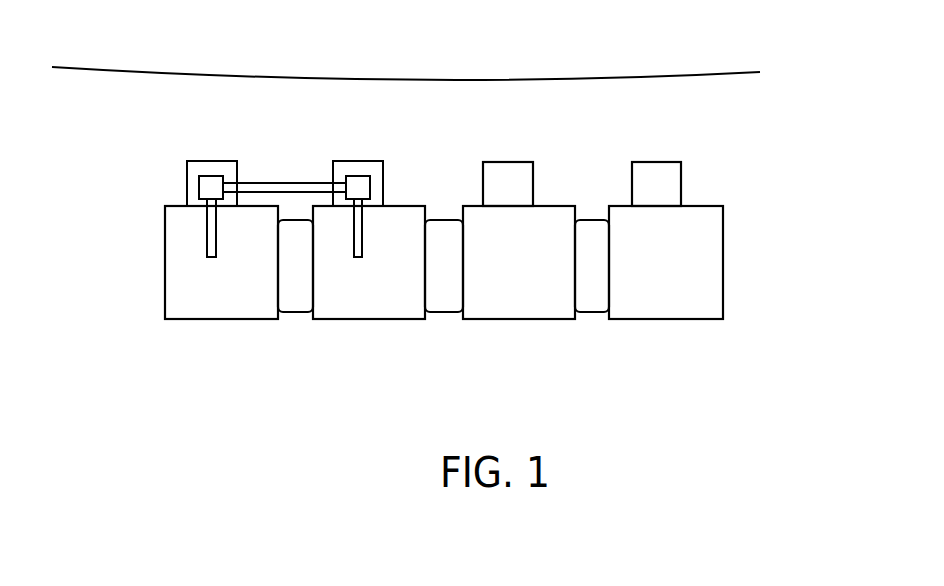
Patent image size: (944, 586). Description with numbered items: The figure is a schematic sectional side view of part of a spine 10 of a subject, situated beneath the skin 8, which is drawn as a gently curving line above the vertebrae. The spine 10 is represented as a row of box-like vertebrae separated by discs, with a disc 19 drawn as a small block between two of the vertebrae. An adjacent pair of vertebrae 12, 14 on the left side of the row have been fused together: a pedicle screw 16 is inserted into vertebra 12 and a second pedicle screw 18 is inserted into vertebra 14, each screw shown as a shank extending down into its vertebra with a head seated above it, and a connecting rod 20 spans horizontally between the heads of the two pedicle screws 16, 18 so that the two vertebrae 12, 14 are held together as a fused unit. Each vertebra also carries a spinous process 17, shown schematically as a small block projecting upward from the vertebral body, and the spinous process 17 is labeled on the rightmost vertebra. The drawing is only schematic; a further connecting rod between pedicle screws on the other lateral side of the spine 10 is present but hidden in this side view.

The skin 8 is at (515, 80).
The spine 10 is at (442, 212).
The vertebra 12 is at (232, 320).
The vertebra 14 is at (373, 320).
The pedicle screw 16 is at (213, 176).
The spinous process 17 is at (645, 162).
The pedicle screw 18 is at (359, 176).
The disc 19 is at (598, 316).
The connecting rod 20 is at (278, 183).